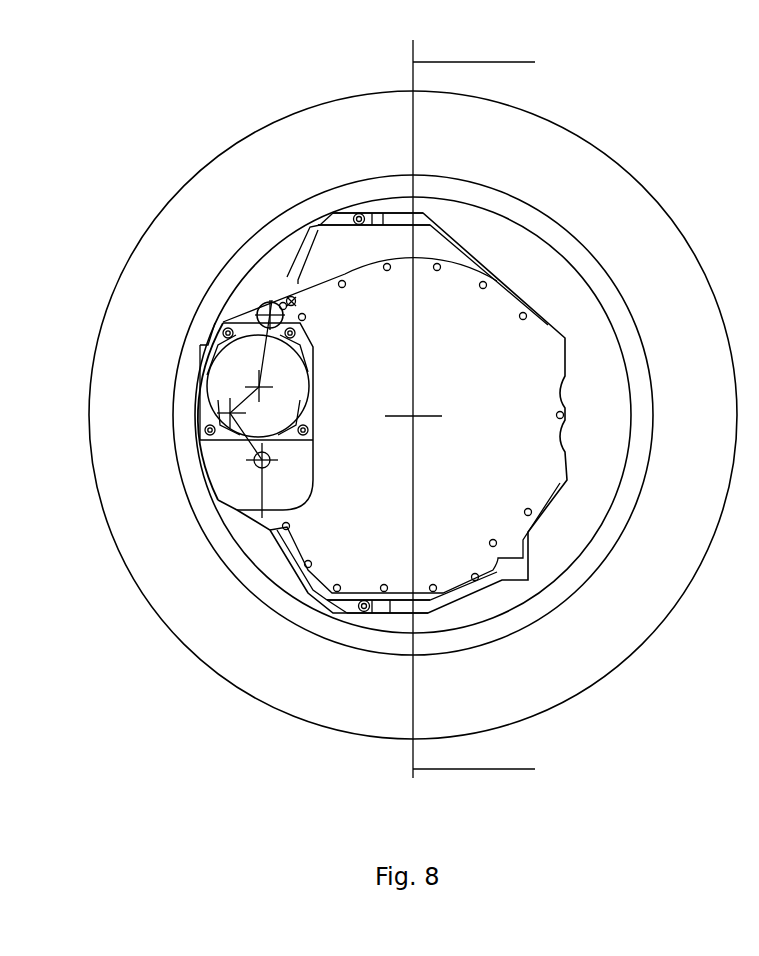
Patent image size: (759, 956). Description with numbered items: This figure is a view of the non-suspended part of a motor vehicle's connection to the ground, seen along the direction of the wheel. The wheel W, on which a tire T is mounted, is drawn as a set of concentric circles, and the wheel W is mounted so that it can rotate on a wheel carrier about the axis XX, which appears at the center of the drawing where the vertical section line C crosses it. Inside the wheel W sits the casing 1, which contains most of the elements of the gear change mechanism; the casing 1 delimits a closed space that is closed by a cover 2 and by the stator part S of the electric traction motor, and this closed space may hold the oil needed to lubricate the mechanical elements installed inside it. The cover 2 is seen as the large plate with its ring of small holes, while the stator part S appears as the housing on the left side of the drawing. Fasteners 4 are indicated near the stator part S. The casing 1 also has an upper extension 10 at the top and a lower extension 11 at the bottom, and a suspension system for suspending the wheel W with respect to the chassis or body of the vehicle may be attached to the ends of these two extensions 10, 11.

The casing 1 is at (517, 545).
The cover 2 is at (492, 303).
The fastening bolts 4 is at (295, 300).
The upper extension 10 is at (352, 214).
The lower extension 11 is at (340, 615).
The stator part S is at (227, 375).
The tire T is at (567, 163).
The wheel W is at (592, 275).
The section line C is at (486, 410).
The axis XX is at (415, 430).